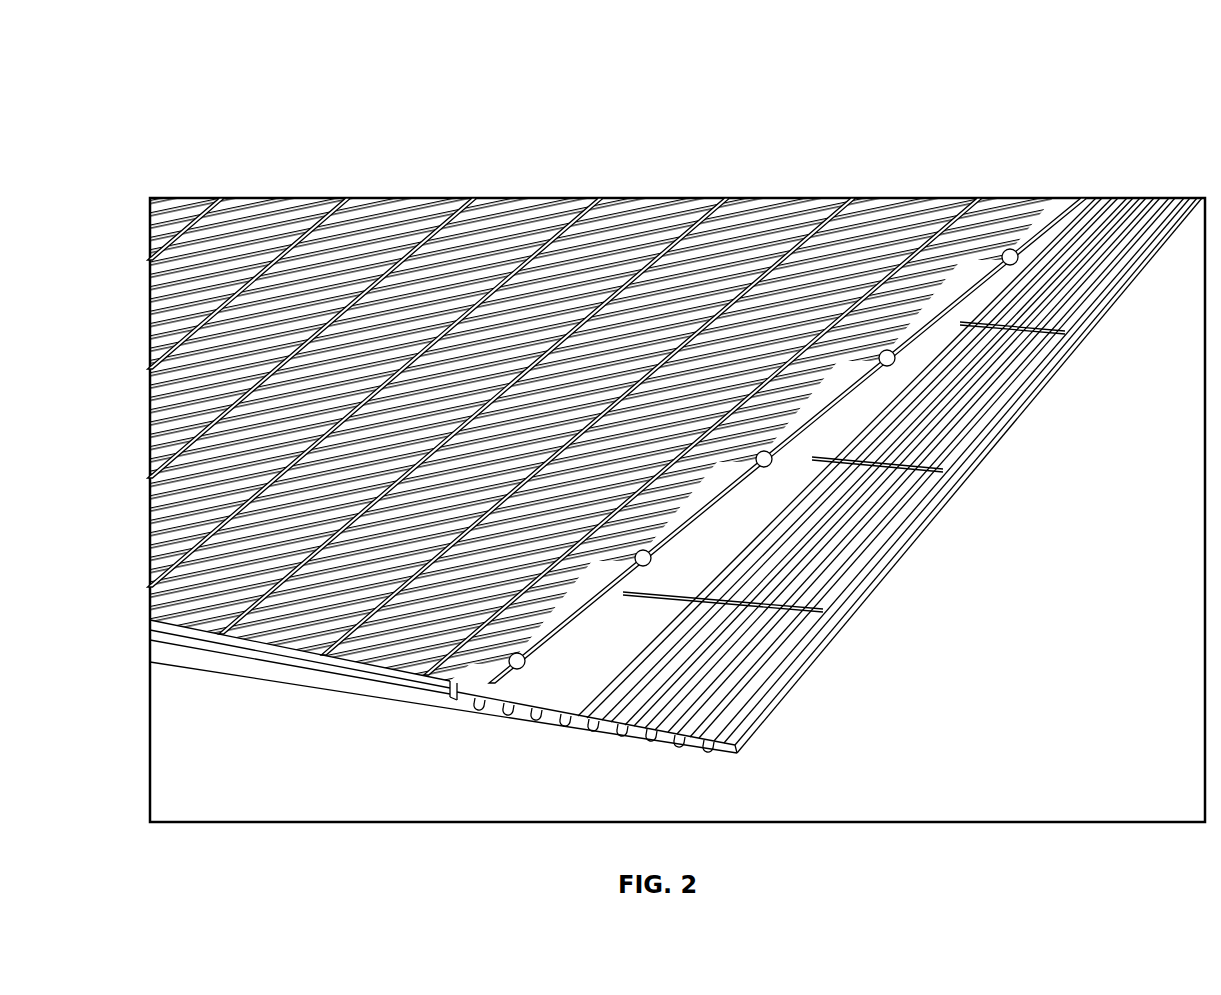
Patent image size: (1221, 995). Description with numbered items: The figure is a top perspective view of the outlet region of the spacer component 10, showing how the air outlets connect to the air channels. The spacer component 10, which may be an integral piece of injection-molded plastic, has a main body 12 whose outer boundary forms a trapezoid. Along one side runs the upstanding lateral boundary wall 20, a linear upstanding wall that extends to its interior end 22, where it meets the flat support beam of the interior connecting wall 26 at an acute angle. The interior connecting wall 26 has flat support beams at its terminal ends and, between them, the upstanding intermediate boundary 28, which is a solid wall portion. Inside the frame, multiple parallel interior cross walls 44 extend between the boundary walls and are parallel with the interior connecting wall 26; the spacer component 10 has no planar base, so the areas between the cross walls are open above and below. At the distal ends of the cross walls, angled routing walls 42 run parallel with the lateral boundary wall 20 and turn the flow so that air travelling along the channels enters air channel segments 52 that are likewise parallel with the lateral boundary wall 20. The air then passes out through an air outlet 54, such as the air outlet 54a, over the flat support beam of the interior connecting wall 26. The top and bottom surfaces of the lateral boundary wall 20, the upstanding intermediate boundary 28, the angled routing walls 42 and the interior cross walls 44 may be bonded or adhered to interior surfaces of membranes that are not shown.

The spacer component 10 is at (547, 138).
The main body 12 is at (307, 687).
The upstanding lateral boundary wall 20 is at (893, 580).
The interior end 22 is at (755, 730).
The interior connecting wall 26 is at (395, 690).
The upstanding intermediate boundary 28 is at (360, 693).
The angled routing wall 42 is at (890, 487).
The interior cross walls 44 is at (790, 250).
The air channel segments 52 is at (997, 343).
The air outlet 54 is at (625, 735).
The air outlet 54a is at (700, 738).